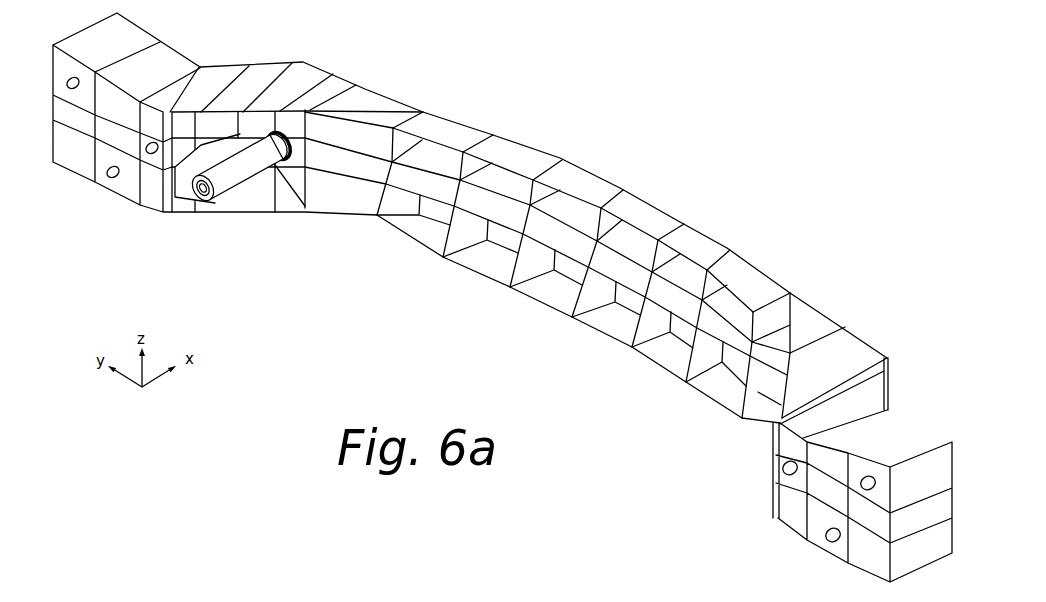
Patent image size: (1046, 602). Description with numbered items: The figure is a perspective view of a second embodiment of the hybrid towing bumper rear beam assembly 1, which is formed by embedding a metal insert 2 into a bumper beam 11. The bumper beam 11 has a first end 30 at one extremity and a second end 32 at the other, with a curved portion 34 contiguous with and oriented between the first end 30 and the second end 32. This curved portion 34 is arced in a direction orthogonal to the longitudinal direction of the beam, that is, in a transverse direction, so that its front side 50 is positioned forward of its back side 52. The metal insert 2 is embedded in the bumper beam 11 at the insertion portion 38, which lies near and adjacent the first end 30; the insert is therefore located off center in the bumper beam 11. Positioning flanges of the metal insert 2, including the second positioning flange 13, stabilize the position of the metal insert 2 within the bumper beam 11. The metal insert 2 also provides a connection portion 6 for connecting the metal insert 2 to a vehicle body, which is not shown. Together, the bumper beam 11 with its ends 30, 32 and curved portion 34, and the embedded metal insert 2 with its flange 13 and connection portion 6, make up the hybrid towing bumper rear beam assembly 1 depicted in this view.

The hybrid towing bumper rear beam assembly 1 is at (570, 113).
The metal insert 2 is at (212, 193).
The connection portion 6 is at (147, 144).
The bumper beam 11 is at (840, 358).
The second positioning flange 13 is at (284, 144).
The first end 30 is at (78, 123).
The second end 32 is at (920, 470).
The curved portion 34 is at (702, 247).
The insertion portion 38 is at (283, 197).
The front side 50 is at (594, 186).
The back side 52 is at (598, 338).